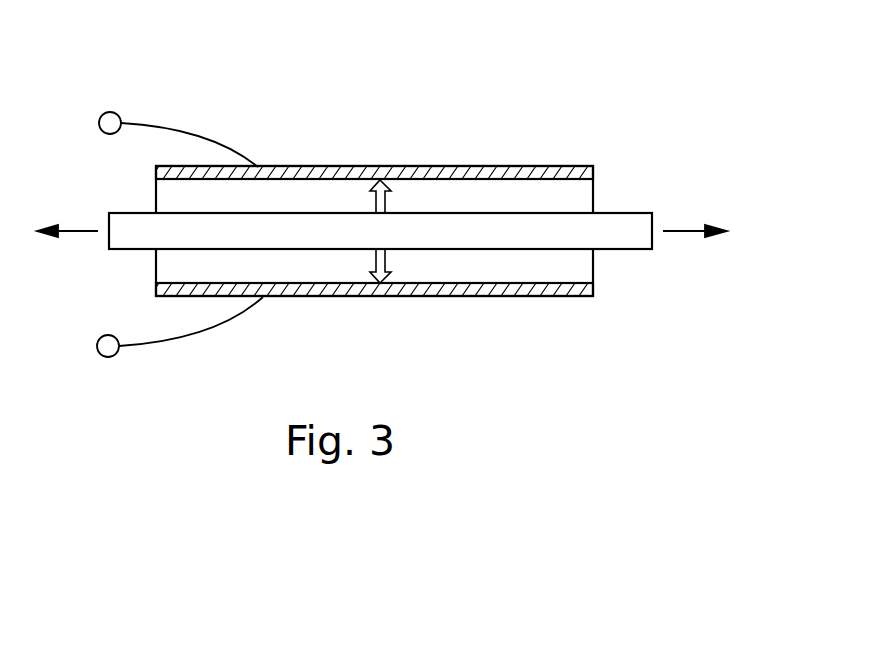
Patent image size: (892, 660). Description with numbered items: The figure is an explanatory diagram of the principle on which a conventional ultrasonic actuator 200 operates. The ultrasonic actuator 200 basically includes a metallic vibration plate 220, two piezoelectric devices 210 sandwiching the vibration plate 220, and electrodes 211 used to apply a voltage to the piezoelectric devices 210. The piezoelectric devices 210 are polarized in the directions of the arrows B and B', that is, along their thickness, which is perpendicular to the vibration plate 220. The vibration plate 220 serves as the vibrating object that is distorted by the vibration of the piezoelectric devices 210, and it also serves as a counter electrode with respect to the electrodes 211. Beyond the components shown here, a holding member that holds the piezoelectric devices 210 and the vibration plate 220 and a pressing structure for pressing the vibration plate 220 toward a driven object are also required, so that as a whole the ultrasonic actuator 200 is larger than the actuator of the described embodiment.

The ultrasonic actuator 200 is at (397, 185).
The piezoelectric devices 210 is at (522, 268).
The electrodes 211 is at (292, 290).
The vibration plate 220 is at (625, 228).